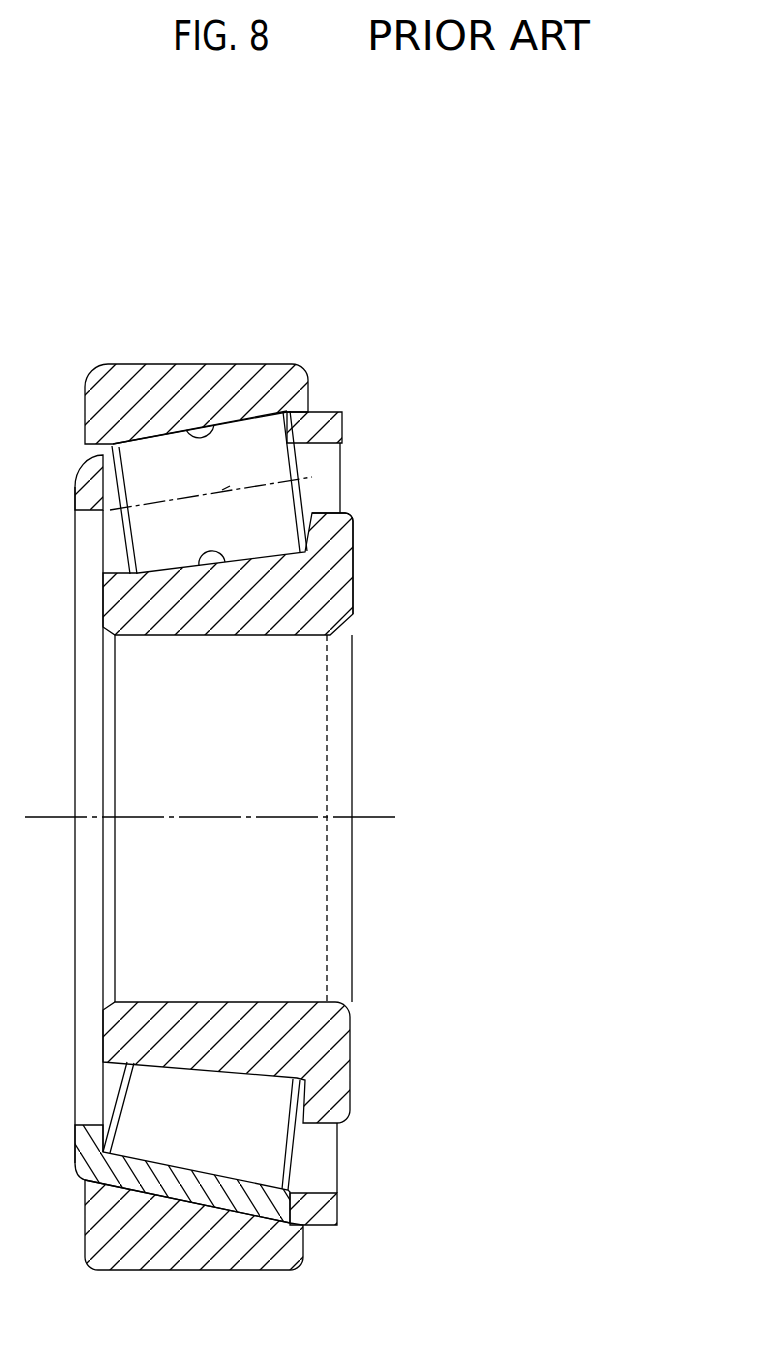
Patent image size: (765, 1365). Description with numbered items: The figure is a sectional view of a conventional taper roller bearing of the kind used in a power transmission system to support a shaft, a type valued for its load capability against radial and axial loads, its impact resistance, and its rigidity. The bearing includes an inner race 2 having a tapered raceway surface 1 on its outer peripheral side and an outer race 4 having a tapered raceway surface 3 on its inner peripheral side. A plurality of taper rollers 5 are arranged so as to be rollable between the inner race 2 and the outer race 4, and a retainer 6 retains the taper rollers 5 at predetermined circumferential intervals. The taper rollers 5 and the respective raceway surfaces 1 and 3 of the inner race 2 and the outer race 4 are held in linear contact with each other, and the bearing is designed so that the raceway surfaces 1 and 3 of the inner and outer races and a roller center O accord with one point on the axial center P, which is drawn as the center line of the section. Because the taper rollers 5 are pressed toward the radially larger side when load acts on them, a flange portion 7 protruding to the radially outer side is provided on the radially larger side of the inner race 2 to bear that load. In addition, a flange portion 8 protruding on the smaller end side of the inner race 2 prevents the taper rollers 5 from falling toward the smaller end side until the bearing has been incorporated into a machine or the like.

The tapered raceway surface 1 is at (209, 637).
The inner race 2 is at (327, 590).
The tapered raceway surface 3 is at (204, 436).
The outer race 4 is at (157, 378).
The taper rollers 5 is at (278, 508).
The retainer 6 is at (342, 423).
The flange portion 7 is at (330, 1103).
The flange portion 8 is at (100, 1090).
The roller center O is at (226, 488).
The axial center P is at (367, 818).